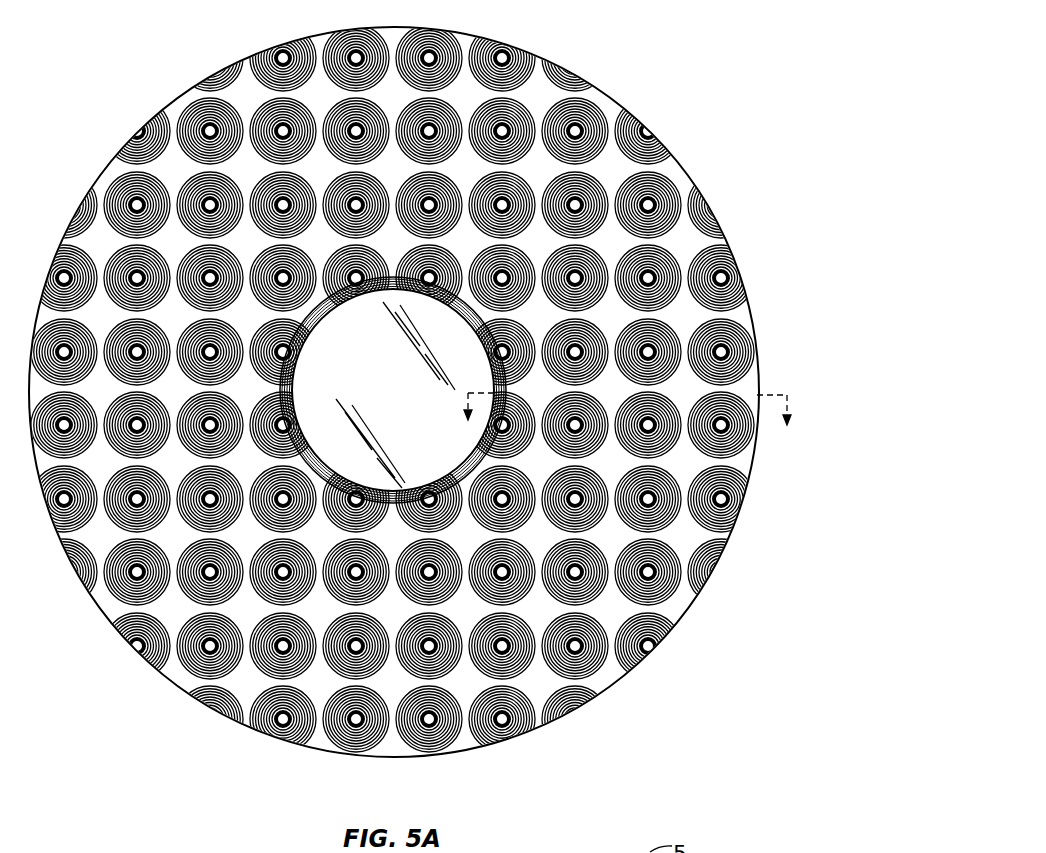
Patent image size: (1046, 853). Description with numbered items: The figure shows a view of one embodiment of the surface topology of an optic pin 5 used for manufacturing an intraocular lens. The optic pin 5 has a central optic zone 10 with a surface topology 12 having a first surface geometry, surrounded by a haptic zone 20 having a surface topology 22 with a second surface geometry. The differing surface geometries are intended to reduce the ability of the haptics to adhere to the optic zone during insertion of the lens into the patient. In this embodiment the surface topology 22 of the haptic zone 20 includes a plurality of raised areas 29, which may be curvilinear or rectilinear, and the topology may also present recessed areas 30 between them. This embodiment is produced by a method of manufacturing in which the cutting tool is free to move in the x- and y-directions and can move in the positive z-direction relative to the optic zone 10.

The optic pin 5 is at (418, 391).
The optic zone 10 is at (510, 324).
The surface topology 12 is at (356, 362).
The haptic zone 20 is at (652, 322).
The surface topology 22 is at (418, 391).
The raised areas 29 is at (685, 392).
The recessed areas 30 is at (683, 427).